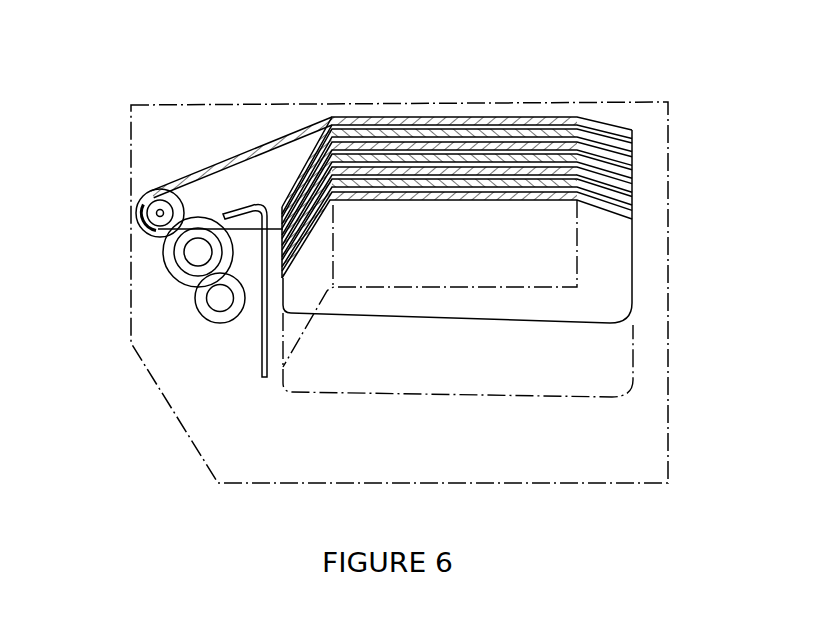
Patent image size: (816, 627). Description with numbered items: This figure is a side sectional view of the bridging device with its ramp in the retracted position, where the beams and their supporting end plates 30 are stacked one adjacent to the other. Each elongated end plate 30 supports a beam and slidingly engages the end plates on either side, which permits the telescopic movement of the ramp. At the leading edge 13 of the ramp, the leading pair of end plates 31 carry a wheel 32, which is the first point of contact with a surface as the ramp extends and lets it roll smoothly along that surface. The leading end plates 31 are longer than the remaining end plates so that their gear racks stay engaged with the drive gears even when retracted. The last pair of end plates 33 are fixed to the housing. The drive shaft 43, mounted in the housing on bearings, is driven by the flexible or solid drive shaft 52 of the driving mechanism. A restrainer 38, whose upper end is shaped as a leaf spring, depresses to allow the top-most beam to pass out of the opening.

The leading edge 13 is at (126, 184).
The end plate 30 is at (608, 202).
The leading pair of end plates 31 is at (262, 172).
The wheel 32 is at (157, 196).
The last pair of end plates 33 is at (523, 368).
The restrainer 38 is at (260, 364).
The drive shaft 43 is at (193, 258).
The flexible or solid drive shaft 52 is at (219, 301).